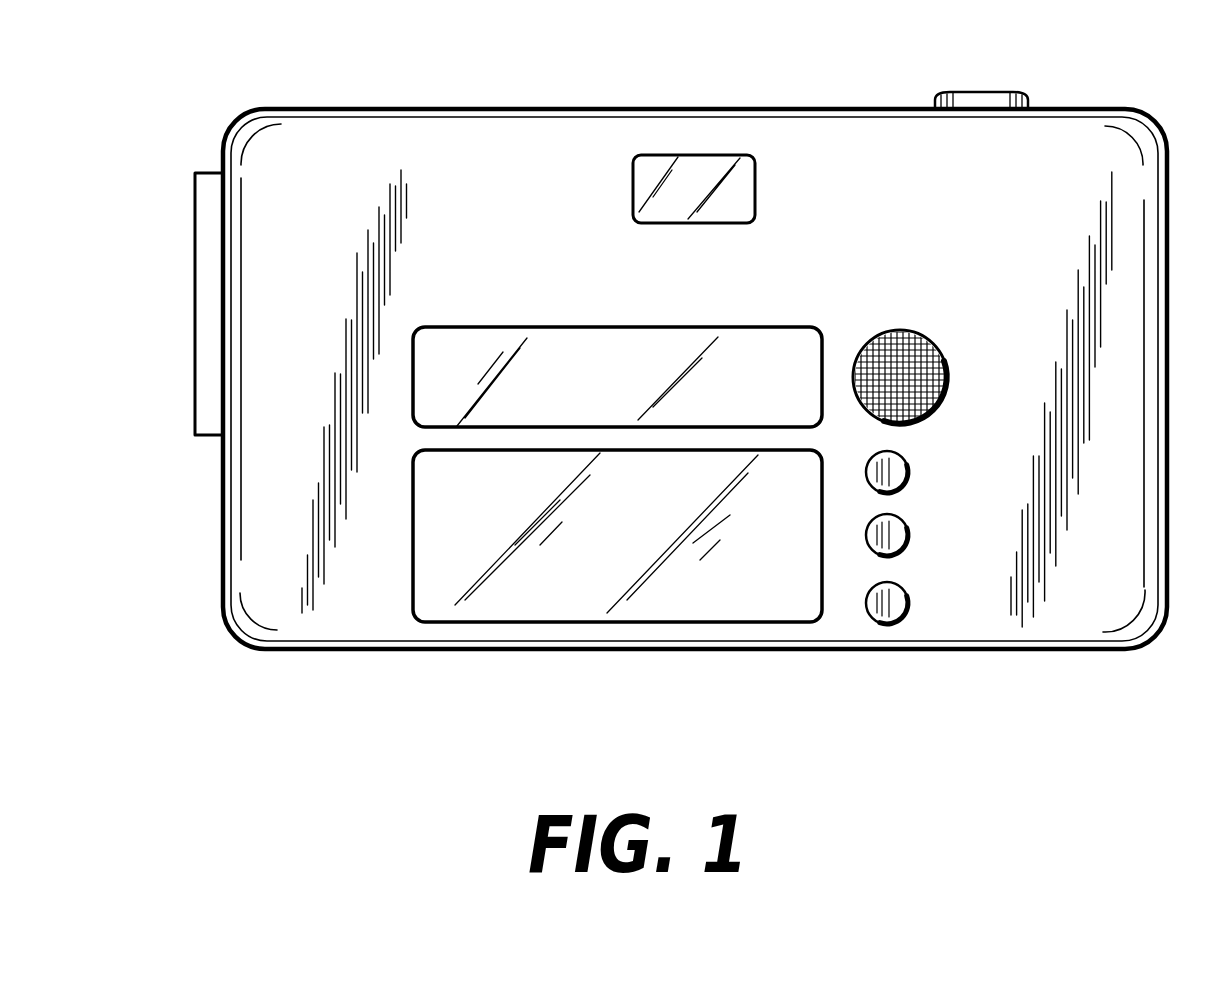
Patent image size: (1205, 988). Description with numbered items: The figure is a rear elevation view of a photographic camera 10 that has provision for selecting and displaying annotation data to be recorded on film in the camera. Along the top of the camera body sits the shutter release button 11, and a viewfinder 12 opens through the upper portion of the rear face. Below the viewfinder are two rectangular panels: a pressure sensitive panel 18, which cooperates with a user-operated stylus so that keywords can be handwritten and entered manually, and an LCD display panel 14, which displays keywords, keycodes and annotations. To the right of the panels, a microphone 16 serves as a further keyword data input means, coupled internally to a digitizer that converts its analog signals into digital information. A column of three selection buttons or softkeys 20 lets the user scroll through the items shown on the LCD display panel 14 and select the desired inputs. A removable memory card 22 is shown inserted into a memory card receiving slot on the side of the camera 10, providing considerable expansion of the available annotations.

The camera 10 is at (525, 109).
The shutter release button 11 is at (983, 92).
The viewfinder 12 is at (757, 177).
The LCD display panel 14 is at (483, 622).
The microphone 16 is at (920, 330).
The pressure sensitive panel 18 is at (503, 327).
The selection buttons or softkeys 20 is at (920, 452).
The removable memory card 22 is at (194, 259).